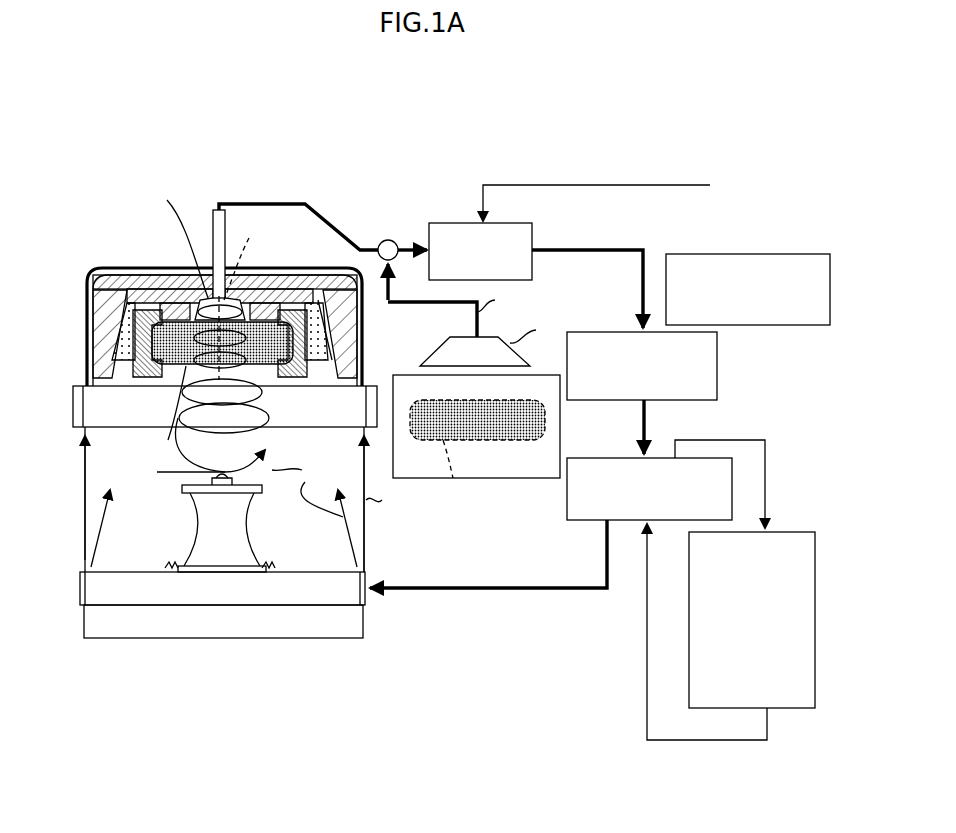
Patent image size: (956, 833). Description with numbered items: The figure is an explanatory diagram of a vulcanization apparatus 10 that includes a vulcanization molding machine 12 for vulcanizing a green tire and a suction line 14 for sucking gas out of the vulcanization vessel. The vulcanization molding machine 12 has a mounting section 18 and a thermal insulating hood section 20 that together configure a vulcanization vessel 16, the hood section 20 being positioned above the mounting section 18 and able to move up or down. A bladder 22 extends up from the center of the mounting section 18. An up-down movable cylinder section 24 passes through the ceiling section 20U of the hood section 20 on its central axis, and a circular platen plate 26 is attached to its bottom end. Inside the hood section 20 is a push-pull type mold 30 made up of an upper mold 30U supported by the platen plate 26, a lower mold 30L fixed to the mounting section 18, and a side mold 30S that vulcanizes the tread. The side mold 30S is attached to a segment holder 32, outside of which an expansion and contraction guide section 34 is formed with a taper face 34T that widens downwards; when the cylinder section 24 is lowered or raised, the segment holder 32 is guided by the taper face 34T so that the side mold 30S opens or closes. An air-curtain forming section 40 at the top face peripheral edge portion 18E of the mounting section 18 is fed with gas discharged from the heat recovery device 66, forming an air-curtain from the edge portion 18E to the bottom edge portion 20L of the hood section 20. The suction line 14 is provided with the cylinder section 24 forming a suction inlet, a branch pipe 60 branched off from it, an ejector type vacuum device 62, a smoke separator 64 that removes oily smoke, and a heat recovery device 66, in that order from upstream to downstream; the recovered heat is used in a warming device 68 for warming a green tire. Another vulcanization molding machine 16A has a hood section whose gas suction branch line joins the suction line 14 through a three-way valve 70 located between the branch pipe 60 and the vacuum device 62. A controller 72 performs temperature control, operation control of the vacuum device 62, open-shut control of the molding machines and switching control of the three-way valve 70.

The vulcanization apparatus 10 is at (160, 108).
The vulcanization molding machine 12 is at (82, 665).
The suction line 14 is at (548, 654).
The vulcanization vessel 16 is at (108, 220).
The vulcanization molding machine 16A is at (540, 478).
The mounting section 18 is at (84, 620).
The top face peripheral edge portion 18E is at (372, 564).
The hood section 20 is at (90, 295).
The ceiling section 20U is at (283, 272).
The bottom edge portion 20L is at (83, 430).
The bladder 22 is at (250, 518).
The cylinder section 24 is at (215, 235).
The branch pipe 60 is at (220, 265).
The platen plate 26 is at (292, 290).
The mold 30 is at (140, 405).
The upper mold 30U is at (172, 292).
The lower mold 30L is at (172, 567).
The side mold 30S is at (290, 378).
The segment holder 32 is at (120, 378).
The expansion and contraction guide section 34 is at (345, 327).
The taper face 34T is at (326, 345).
The air-curtain forming section 40 is at (343, 558).
The vacuum device 62 is at (535, 236).
The smoke separator 64 is at (718, 360).
The heat recovery device 66 is at (605, 457).
The warming device 68 is at (788, 530).
The three-way valve 70 is at (390, 240).
The controller 72 is at (715, 254).